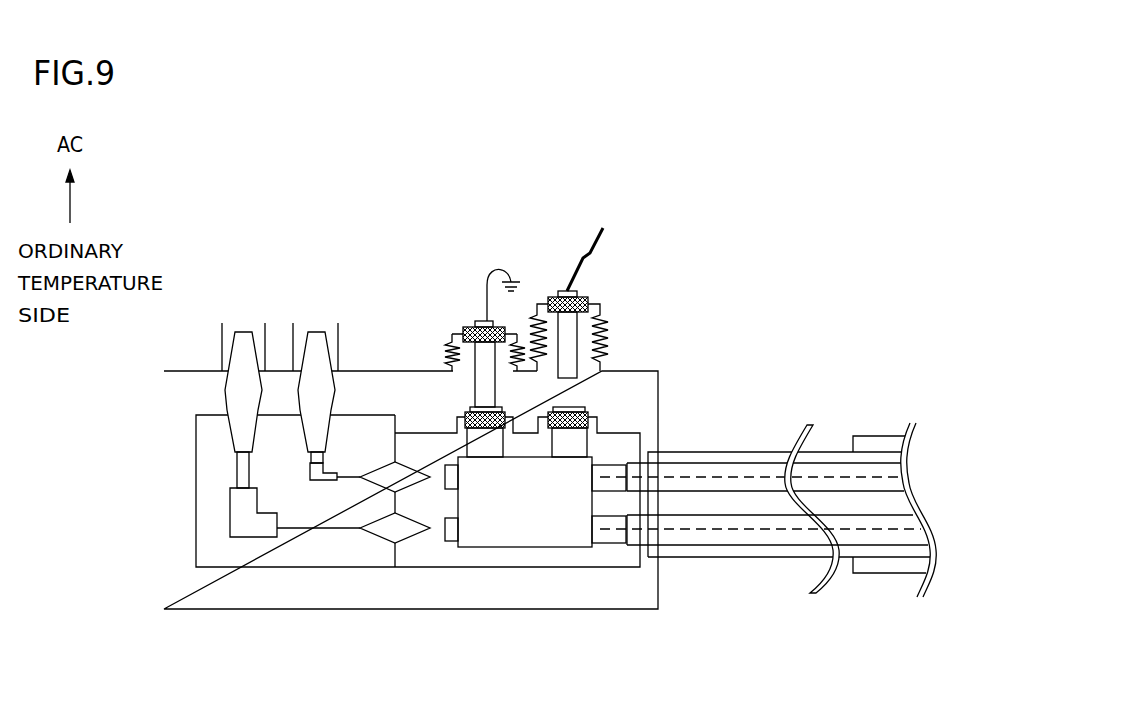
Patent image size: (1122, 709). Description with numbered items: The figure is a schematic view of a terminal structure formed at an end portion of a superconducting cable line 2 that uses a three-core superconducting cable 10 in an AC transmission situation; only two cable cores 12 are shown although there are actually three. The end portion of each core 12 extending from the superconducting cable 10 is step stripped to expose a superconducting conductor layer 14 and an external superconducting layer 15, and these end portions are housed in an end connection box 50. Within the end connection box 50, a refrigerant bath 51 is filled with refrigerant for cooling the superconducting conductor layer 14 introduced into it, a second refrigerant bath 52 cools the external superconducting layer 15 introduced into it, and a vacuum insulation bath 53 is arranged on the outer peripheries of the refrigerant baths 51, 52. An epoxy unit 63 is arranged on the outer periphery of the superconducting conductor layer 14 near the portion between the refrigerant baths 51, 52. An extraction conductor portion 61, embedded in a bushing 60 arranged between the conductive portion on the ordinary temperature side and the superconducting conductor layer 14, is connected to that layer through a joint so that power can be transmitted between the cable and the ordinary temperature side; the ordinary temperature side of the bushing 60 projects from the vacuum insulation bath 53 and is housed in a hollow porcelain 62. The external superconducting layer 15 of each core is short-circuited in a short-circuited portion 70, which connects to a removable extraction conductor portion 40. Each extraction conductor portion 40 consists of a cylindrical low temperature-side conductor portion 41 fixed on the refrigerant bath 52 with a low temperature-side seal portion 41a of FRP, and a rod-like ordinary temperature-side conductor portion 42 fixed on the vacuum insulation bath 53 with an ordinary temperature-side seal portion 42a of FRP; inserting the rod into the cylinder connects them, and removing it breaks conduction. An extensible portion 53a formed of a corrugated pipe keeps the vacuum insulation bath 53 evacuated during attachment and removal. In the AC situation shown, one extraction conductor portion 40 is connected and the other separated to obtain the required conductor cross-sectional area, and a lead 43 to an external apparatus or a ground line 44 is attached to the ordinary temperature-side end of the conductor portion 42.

The superconducting cable 2 is at (870, 437).
The superconducting cable 10 is at (714, 448).
The cable core 12 is at (733, 550).
The superconducting conductor layer 14 is at (308, 530).
The external superconducting layer 15 is at (597, 545).
The extraction conductor portion 40 is at (697, 285).
The low temperature-side conductor portion 41 is at (572, 407).
The low temperature-side seal portion 41a is at (590, 417).
The ordinary temperature-side conductor portion 42 is at (577, 332).
The ordinary temperature-side seal portion 42a is at (468, 327).
The lead 43 is at (587, 265).
The ground line 44 is at (487, 318).
The end connection box 50 is at (407, 454).
The refrigerant bath 51 is at (197, 513).
The refrigerant bath 52 is at (445, 567).
The vacuum insulation bath 53 is at (163, 570).
The extensible portion 53a is at (448, 355).
The bushing 60 is at (228, 432).
The extraction conductor portion 61 is at (240, 475).
The hollow porcelain 62 is at (222, 350).
The epoxy unit 63 is at (380, 537).
The short-circuited portion 70 is at (563, 548).